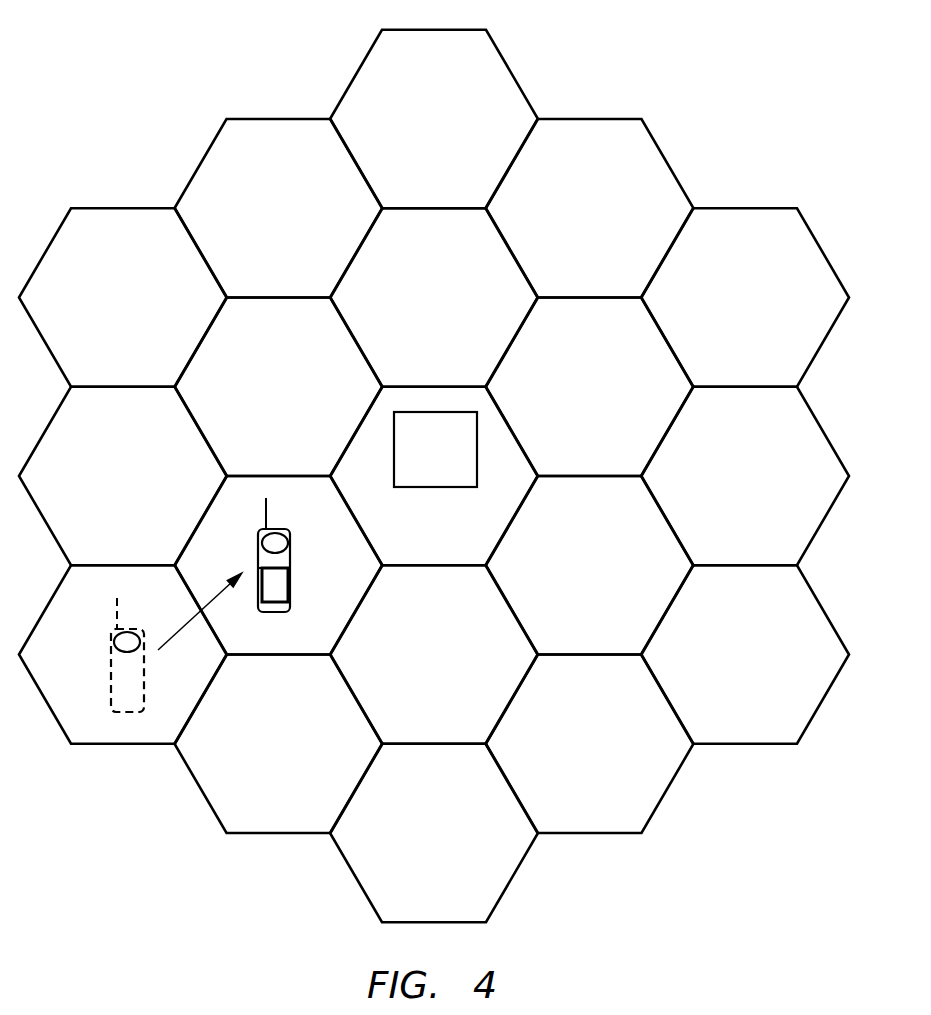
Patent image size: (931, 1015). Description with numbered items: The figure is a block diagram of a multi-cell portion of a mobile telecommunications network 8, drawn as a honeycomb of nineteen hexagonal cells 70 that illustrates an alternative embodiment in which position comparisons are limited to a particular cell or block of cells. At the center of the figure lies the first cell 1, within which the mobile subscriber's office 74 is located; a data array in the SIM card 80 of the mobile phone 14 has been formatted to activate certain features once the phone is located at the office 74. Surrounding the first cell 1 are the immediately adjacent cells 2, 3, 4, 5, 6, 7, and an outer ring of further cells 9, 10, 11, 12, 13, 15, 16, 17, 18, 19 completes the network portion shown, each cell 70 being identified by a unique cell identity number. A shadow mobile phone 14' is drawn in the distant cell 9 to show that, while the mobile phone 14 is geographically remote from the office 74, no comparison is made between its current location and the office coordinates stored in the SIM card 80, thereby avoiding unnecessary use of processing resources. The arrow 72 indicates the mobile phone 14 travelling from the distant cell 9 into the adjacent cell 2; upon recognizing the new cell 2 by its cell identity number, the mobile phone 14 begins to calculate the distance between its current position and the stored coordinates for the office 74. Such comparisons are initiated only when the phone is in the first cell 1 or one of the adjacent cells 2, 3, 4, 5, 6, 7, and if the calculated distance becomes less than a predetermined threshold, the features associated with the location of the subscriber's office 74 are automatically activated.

The mobile telecommunications network 8 is at (449, 476).
The cells 70 is at (494, 271).
The office 74 is at (433, 475).
The mobile phone 14 is at (309, 555).
The SIM card 80 is at (285, 587).
The shadow mobile phone 14' is at (94, 655).
The arrow 72 is at (184, 629).
The first cell 1 is at (434, 476).
The adjacent cell 2 is at (279, 565).
The adjacent cell 3 is at (434, 654).
The adjacent cell 4 is at (590, 565).
The adjacent cell 5 is at (590, 387).
The adjacent cell 6 is at (434, 297).
The adjacent cell 7 is at (279, 387).
The distant cell 9 is at (123, 654).
The cell 10 is at (279, 744).
The cell 11 is at (434, 833).
The cell 12 is at (590, 744).
The cell 13 is at (745, 654).
The cell 15 is at (745, 297).
The cell 16 is at (590, 208).
The cell 17 is at (434, 119).
The cell 18 is at (279, 208).
The cell 19 is at (123, 297).